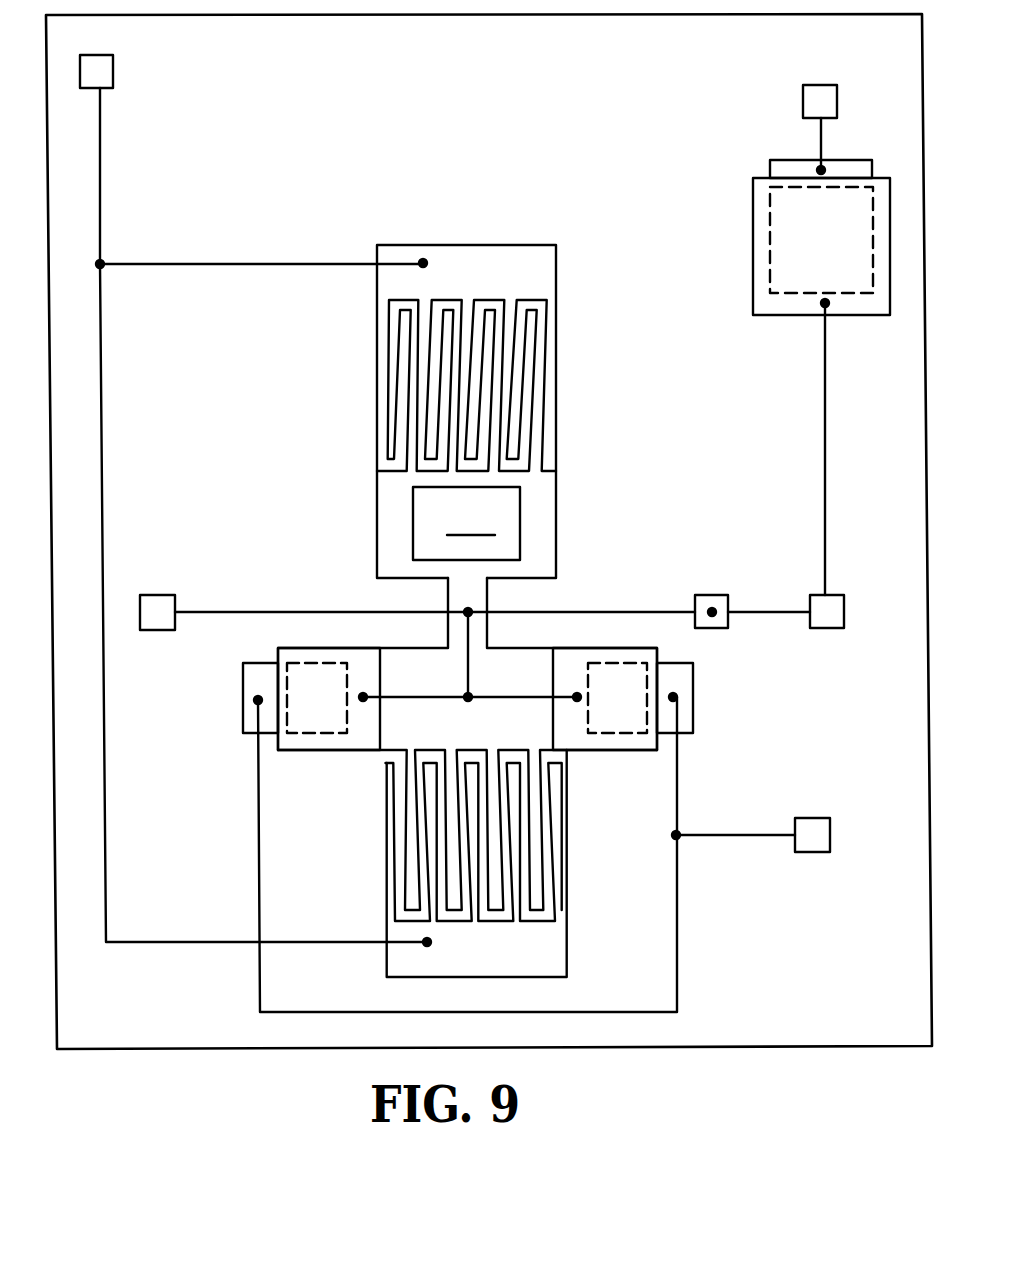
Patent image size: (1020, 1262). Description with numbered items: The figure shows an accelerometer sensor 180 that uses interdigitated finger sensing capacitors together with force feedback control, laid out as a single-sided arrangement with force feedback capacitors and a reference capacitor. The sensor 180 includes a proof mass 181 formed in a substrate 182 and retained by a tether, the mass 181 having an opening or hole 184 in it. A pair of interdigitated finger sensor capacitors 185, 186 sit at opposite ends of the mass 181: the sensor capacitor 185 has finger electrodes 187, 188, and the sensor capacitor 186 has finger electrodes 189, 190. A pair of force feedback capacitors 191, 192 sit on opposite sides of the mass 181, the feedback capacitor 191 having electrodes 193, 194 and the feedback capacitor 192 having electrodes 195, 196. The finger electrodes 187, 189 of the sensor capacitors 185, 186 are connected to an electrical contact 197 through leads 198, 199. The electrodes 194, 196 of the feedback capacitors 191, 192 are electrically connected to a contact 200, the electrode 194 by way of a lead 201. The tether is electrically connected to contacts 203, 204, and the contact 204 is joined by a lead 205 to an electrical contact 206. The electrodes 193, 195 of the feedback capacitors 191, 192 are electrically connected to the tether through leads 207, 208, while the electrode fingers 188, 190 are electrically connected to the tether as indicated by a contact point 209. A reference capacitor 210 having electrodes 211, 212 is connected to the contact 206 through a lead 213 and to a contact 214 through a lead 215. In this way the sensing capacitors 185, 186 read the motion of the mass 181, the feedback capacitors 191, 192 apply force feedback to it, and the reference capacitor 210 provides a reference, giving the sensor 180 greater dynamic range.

The sensor 180 is at (457, 102).
The proof mass 181 is at (345, 576).
The substrate 182 is at (730, 400).
The opening or hole 184 is at (466, 523).
The interdigitated finger sensor capacitor 185 is at (511, 203).
The interdigitated finger sensor capacitor 186 is at (628, 864).
The finger electrode 187 is at (386, 347).
The finger electrode 188 is at (408, 391).
The finger electrode 189 is at (572, 811).
The finger electrode 190 is at (410, 828).
The force feedback capacitor 191 is at (768, 714).
The force feedback capacitor 192 is at (210, 696).
The electrode 193 is at (655, 650).
The electrode 194 is at (695, 720).
The electrode 195 is at (297, 650).
The electrode 196 is at (238, 723).
The electrical contact 197 is at (113, 78).
The lead 198 is at (180, 262).
The lead 199 is at (108, 451).
The contact 200 is at (814, 858).
The lead 201 is at (385, 962).
The contact 203 is at (162, 581).
The contact 204 is at (712, 596).
The lead 205 is at (782, 620).
The electrical contact 206 is at (839, 604).
The lead 207 is at (425, 697).
The lead 208 is at (467, 670).
The contact point 209 is at (468, 612).
The reference capacitor 210 is at (720, 190).
The electrode 211 is at (862, 316).
The electrode 212 is at (847, 156).
The lead 213 is at (830, 502).
The contact 214 is at (824, 84).
The lead 215 is at (820, 140).